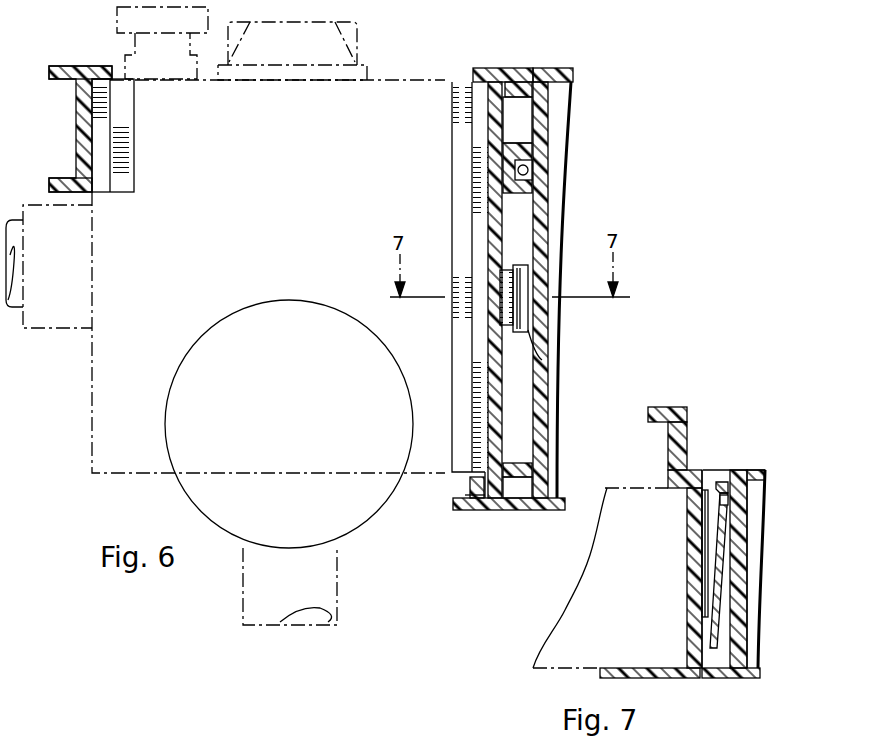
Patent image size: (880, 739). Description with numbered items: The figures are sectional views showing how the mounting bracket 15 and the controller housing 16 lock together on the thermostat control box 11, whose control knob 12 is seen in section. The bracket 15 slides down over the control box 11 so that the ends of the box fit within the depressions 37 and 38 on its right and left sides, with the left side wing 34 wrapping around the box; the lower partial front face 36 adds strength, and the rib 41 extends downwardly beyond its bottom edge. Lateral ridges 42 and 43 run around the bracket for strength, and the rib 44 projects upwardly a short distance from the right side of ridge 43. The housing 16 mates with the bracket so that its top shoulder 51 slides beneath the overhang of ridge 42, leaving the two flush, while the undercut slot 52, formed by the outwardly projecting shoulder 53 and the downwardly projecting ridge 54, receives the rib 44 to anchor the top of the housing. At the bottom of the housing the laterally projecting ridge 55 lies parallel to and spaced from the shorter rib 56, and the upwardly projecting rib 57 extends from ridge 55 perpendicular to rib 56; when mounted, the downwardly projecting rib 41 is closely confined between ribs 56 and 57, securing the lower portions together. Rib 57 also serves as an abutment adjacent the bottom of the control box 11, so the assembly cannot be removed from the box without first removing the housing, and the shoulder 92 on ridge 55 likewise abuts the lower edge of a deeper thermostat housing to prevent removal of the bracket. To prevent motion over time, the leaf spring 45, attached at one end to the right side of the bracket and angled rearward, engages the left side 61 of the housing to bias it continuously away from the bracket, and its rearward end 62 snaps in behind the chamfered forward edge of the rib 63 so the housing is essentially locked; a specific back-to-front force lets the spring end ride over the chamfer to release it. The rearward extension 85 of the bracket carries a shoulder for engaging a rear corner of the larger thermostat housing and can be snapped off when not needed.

In FIG. 6, the thermostat control box 11 is at (388, 80).
In FIG. 7, the thermostat control box 11 is at (548, 669).
In FIG. 6, the control knob 12 is at (200, 335).
In FIG. 6, the mounting bracket 15 is at (490, 80).
In FIG. 7, the mounting bracket 15 is at (677, 410).
In FIG. 6, the controller housing 16 is at (557, 77).
In FIG. 7, the controller housing 16 is at (723, 679).
In FIG. 6, the left side wing 34 is at (78, 107).
In FIG. 7, the lower partial front face 36 is at (660, 678).
In FIG. 6, the depression 37 is at (483, 117).
In FIG. 6, the depression 38 is at (95, 137).
In FIG. 6, the rib 41 is at (520, 509).
In FIG. 6, the lateral ridge 42 is at (78, 68).
In FIG. 6, the lateral ridge 43 is at (67, 182).
In FIG. 6, the rib 44 is at (527, 170).
In FIG. 6, the leaf spring 45 is at (518, 268).
In FIG. 7, the leaf spring 45 is at (700, 552).
In FIG. 6, the top shoulder 51 is at (517, 90).
In FIG. 6, the undercut slot 52 is at (540, 173).
In FIG. 6, the outwardly projecting shoulder 53 is at (527, 143).
In FIG. 6, the downwardly projecting ridge 54 is at (478, 168).
In FIG. 6, the laterally projecting ridge 55 is at (493, 509).
In FIG. 6, the rib 56 is at (510, 465).
In FIG. 6, the upwardly projecting rib 57 is at (470, 480).
In FIG. 6, the left side 61 is at (533, 378).
In FIG. 7, the left side 61 is at (728, 592).
In FIG. 7, the rearward end 62 is at (720, 498).
In FIG. 6, the rib 63 is at (540, 352).
In FIG. 7, the rib 63 is at (722, 482).
In FIG. 7, the extension 85 is at (672, 445).
In FIG. 6, the shoulder 92 is at (475, 495).